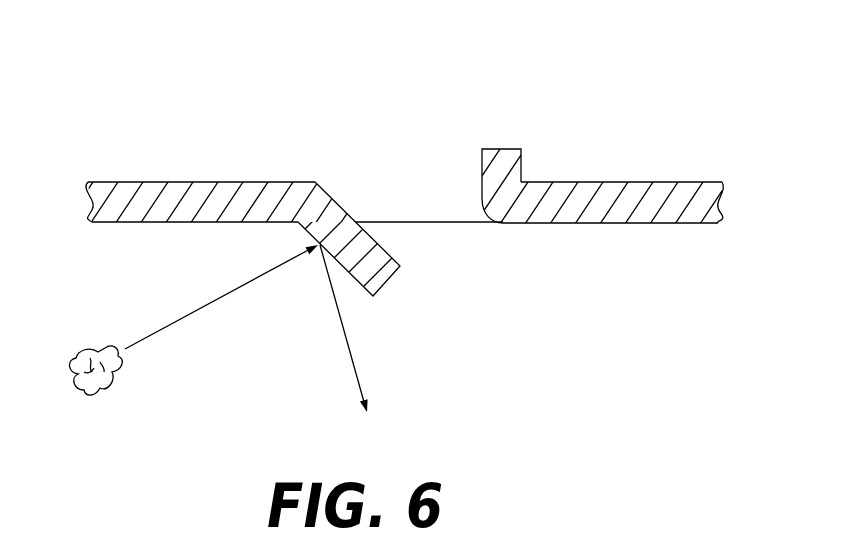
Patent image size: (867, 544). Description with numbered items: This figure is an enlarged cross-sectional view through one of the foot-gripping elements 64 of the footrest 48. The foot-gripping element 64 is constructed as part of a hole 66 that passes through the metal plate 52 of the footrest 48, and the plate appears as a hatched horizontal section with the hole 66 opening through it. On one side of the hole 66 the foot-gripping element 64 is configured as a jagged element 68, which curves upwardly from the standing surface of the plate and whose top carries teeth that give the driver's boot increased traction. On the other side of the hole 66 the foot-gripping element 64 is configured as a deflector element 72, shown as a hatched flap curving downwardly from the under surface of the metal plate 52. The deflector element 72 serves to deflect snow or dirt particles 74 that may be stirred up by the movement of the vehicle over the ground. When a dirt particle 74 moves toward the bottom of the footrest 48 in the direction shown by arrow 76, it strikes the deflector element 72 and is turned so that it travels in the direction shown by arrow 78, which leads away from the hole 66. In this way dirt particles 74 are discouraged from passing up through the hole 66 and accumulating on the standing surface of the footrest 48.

The footrest 48 is at (193, 197).
The metal plate 52 is at (680, 182).
The foot-gripping element 64 is at (358, 126).
The hole 66 is at (412, 190).
The jagged element 68 is at (521, 168).
The deflector element 72 is at (388, 253).
The dirt particle 74 is at (98, 392).
The arrow 76 is at (213, 307).
The arrow 78 is at (347, 335).